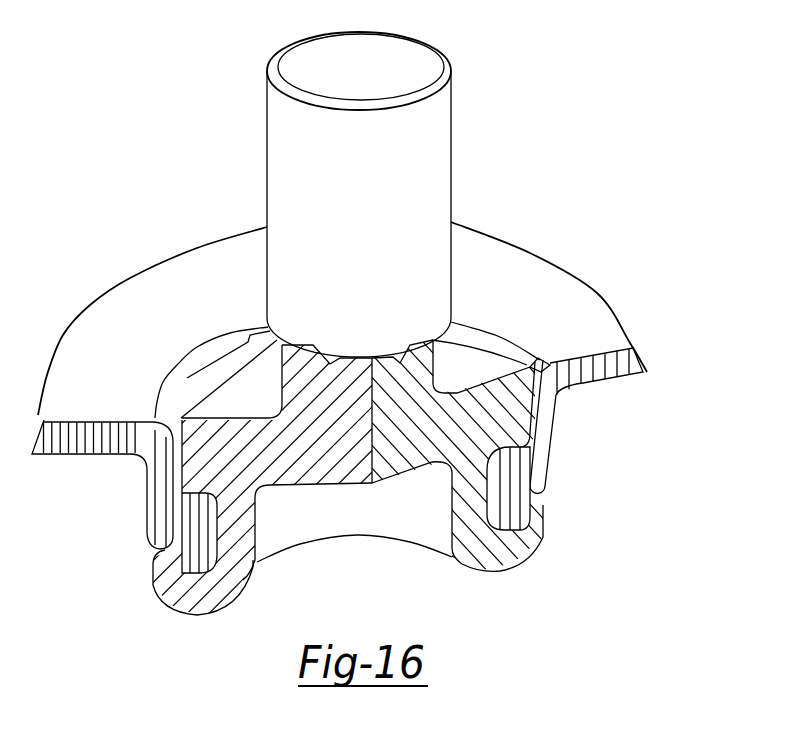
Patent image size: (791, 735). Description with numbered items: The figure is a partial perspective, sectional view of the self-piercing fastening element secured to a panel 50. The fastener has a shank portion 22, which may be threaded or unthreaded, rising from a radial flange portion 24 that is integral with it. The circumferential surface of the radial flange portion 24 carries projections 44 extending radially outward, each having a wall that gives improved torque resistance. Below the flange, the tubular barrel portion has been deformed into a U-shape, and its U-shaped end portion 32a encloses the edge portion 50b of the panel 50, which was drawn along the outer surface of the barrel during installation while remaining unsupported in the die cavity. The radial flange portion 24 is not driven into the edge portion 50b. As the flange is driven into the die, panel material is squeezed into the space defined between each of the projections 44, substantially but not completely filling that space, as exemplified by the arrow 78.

The shank portion 22 is at (392, 48).
The radial flange portion 24 is at (538, 413).
The U-shaped end portion 32a is at (167, 578).
The projection 44 is at (177, 414).
The panel 50 is at (514, 289).
The edge portion of the panel 50b is at (510, 510).
The arrow 78 is at (134, 386).